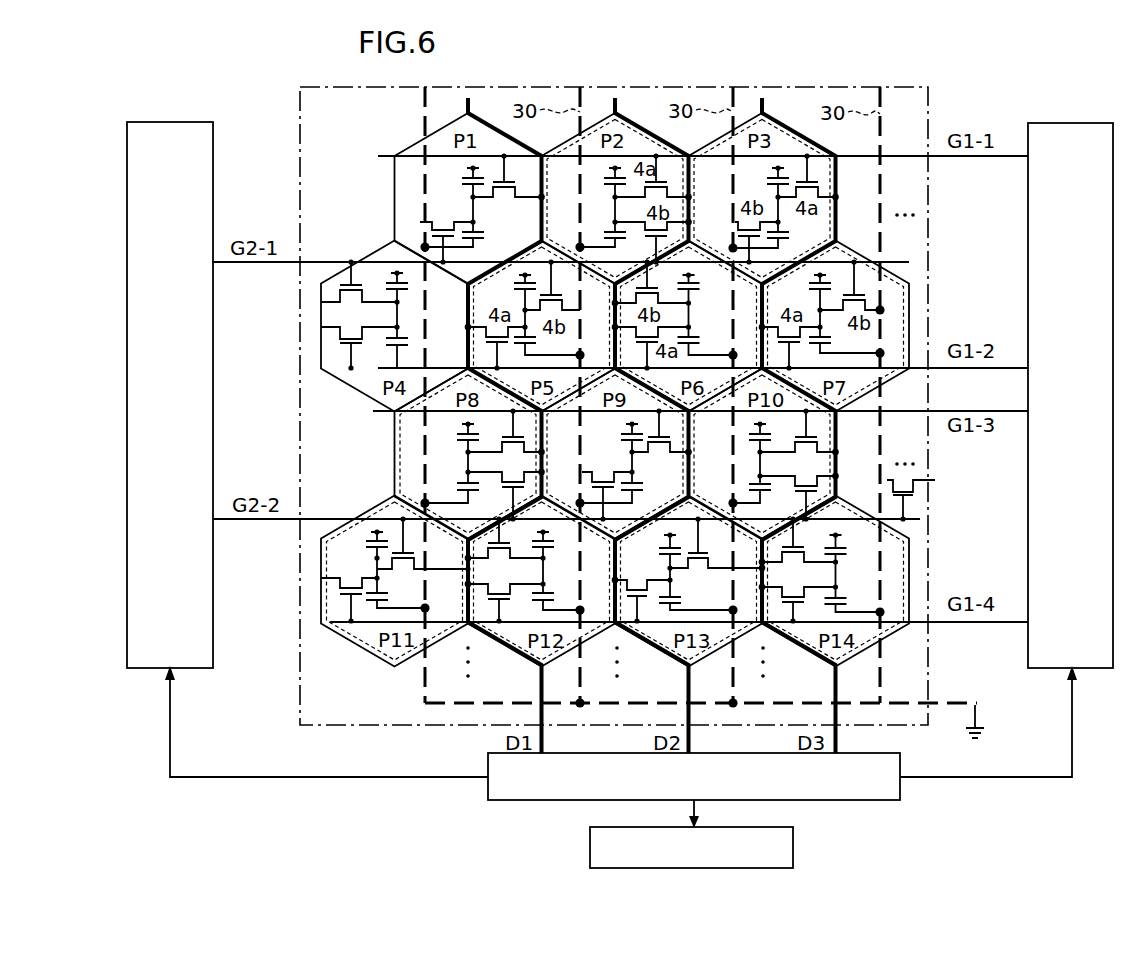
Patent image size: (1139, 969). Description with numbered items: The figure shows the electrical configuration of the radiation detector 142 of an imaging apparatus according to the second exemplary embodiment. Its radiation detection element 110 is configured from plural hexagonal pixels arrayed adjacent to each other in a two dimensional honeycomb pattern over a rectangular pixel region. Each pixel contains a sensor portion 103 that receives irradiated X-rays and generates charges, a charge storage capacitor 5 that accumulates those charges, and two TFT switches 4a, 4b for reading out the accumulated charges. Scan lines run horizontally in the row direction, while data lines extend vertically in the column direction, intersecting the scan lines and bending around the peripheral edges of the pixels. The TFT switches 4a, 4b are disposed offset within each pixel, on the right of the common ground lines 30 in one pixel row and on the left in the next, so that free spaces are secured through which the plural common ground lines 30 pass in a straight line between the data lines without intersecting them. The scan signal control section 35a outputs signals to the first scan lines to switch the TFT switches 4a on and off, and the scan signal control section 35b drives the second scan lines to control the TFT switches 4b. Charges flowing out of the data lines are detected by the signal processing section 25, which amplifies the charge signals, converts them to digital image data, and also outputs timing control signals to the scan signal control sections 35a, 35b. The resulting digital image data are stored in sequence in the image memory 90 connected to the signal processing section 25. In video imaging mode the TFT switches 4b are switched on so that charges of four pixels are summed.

The radiation detector 142 is at (698, 72).
The radiation detection element 110 is at (797, 86).
The scan signal control section 35a is at (1070, 123).
The scan signal control section 35b is at (170, 122).
The common ground line 30 is at (425, 112).
The sensor portion 103 is at (462, 182).
The charge storage capacitor 5 is at (488, 236).
The TFT switch 4a is at (507, 188).
The TFT switch 4b is at (448, 233).
The image memory 90 is at (590, 848).
The signal processing section 25 is at (836, 800).